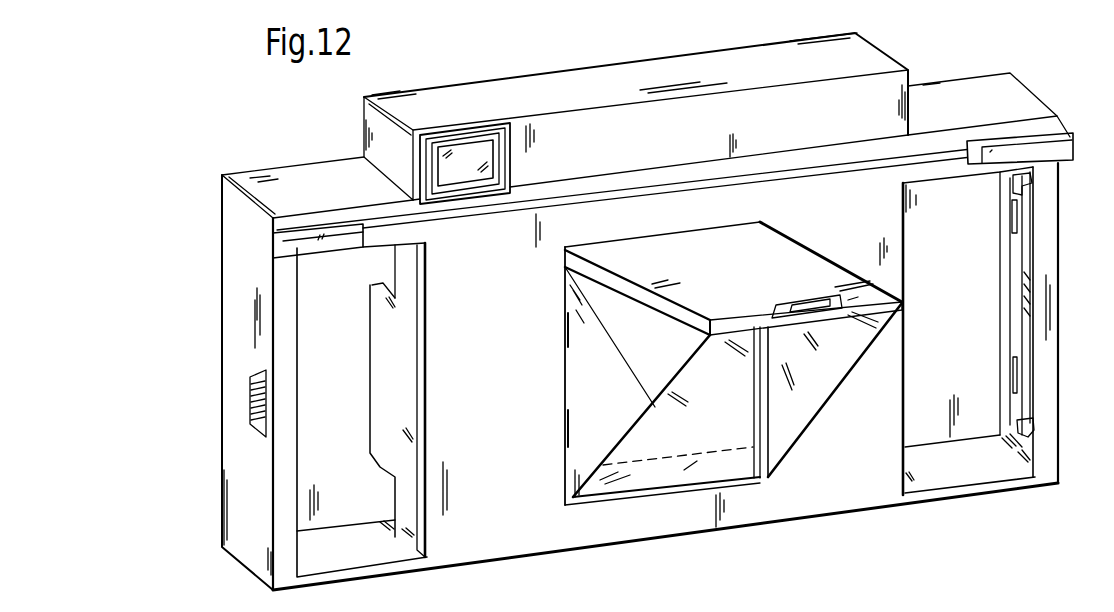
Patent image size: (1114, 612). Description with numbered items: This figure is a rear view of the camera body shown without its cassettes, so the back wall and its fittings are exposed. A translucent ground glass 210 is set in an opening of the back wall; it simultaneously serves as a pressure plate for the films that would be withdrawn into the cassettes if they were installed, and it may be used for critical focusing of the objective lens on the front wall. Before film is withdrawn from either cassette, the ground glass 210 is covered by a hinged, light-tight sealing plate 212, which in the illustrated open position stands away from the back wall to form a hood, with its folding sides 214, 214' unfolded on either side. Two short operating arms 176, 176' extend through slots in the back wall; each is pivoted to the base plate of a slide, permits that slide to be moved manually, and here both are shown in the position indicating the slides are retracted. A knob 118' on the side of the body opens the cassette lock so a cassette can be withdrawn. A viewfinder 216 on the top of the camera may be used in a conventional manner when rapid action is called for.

The viewfinder 216 is at (487, 142).
The hinged, light-tight sealing plate 212 is at (800, 258).
The folding side 214' is at (627, 382).
The folding side 214 is at (835, 390).
The translucent ground glass 210 is at (670, 468).
The operating arm 176 is at (318, 263).
The operating arm 176' is at (1033, 122).
The knob 118' is at (223, 403).